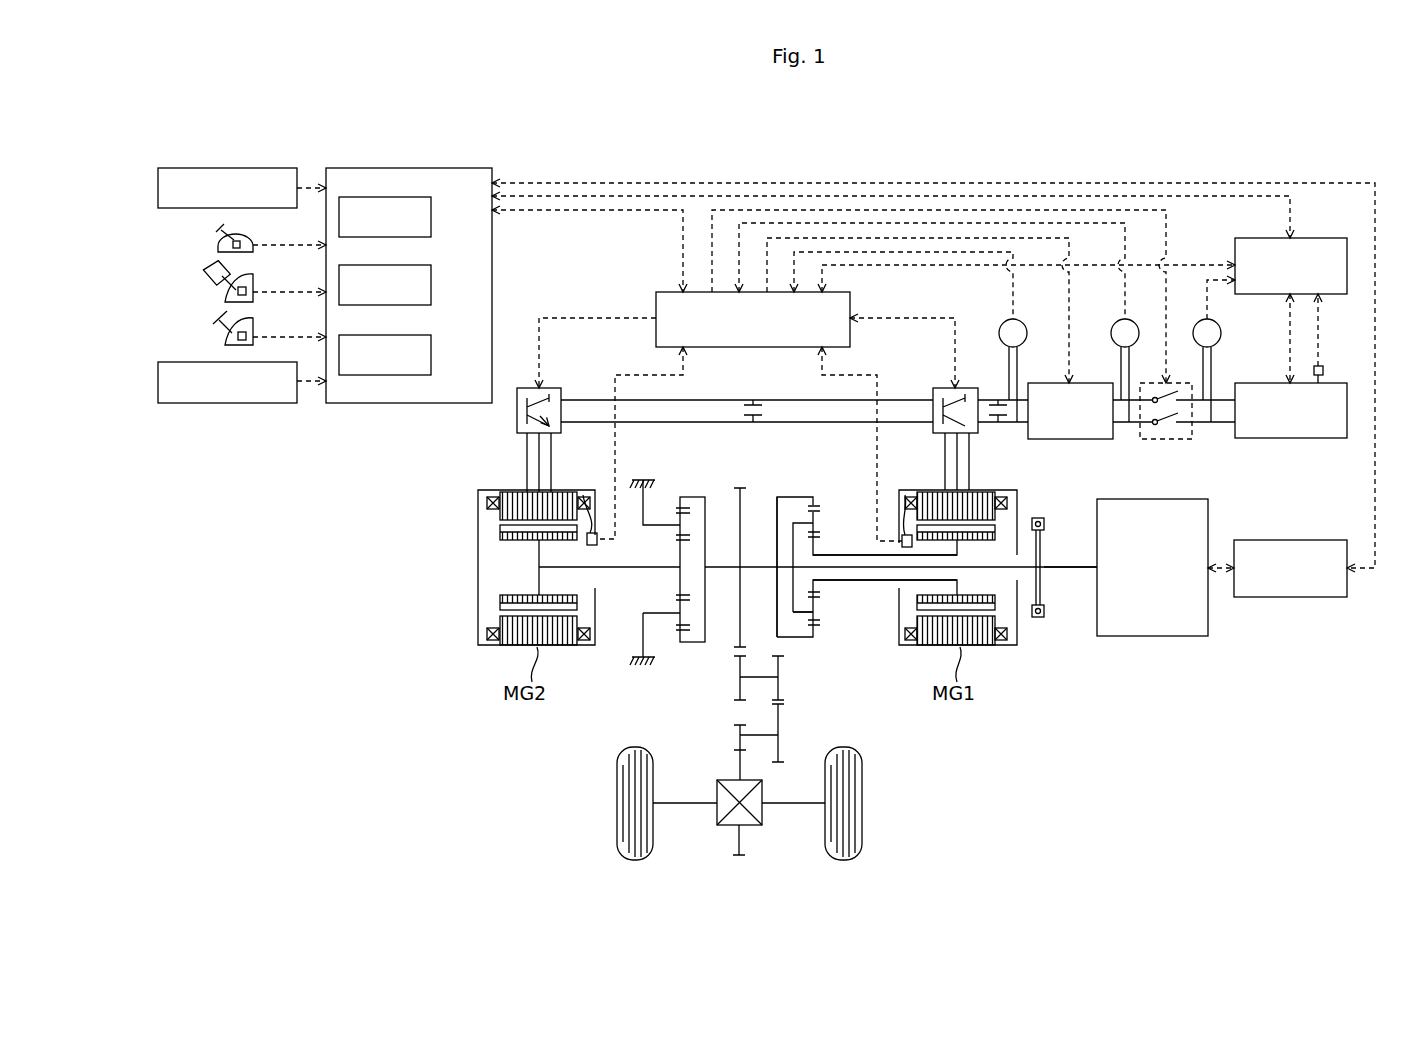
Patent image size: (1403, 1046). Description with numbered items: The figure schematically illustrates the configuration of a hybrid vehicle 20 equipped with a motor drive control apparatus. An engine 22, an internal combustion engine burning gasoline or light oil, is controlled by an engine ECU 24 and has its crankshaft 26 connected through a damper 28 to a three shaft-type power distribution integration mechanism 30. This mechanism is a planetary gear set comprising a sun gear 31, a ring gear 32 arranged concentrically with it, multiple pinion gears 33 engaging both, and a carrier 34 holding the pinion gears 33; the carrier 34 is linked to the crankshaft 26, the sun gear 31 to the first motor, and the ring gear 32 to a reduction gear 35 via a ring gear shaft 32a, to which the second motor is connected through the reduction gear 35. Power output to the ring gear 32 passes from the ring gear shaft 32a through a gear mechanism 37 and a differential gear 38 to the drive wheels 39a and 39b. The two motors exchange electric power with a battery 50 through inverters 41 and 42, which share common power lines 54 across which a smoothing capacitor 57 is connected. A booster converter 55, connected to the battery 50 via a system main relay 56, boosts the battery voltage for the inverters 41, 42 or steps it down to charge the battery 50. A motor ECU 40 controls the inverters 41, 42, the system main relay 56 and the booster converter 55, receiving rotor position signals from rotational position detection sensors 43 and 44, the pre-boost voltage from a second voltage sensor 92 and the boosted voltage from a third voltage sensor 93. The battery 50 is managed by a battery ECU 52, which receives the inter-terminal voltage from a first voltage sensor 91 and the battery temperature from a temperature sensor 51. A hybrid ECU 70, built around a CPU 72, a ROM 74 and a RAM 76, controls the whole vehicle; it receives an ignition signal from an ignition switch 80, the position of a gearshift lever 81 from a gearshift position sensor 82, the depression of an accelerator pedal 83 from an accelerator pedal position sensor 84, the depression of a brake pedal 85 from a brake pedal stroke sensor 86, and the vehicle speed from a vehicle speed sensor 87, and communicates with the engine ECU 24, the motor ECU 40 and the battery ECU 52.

The hybrid vehicle 20 is at (368, 574).
The engine 22 is at (1153, 637).
The engine electronic control unit 24 is at (1291, 598).
The crankshaft 26 is at (1063, 570).
The damper 28 is at (1038, 617).
The power distribution integration mechanism 30 is at (822, 497).
The sun gear 31 is at (818, 592).
The ring gear 32 is at (818, 637).
The ring gear shaft 32a is at (724, 567).
The pinion gears 33 is at (818, 620).
The carrier 34 is at (792, 540).
The reduction gear 35 is at (688, 493).
The gear mechanism 37 is at (796, 722).
The differential gear 38 is at (722, 778).
The drive wheel 39a is at (617, 803).
The drive wheel 39b is at (862, 803).
The motor electronic control unit 40 is at (658, 302).
The inverter 41 is at (940, 394).
The inverter 42 is at (561, 392).
The rotational position detection sensor 43 is at (905, 535).
The rotational position detection sensor 44 is at (592, 533).
The battery 50 is at (1323, 440).
The temperature sensor 51 is at (1320, 366).
The battery electronic control unit 52 is at (1322, 238).
The power lines 54 is at (700, 422).
The booster converter 55 is at (1073, 440).
The system main relay 56 is at (1171, 440).
The smoothing capacitor 57 is at (996, 405).
The hybrid electronic control unit 70 is at (410, 168).
The CPU 72 is at (431, 216).
The ROM 74 is at (431, 284).
The RAM 76 is at (431, 354).
The ignition switch 80 is at (158, 186).
The gearshift lever 81 is at (218, 228).
The gearshift position sensor 82 is at (218, 247).
The accelerator pedal 83 is at (204, 270).
The accelerator pedal position sensor 84 is at (226, 296).
The brake pedal 85 is at (214, 322).
The brake pedal stroke sensor 86 is at (226, 340).
The vehicle speed sensor 87 is at (158, 383).
The first voltage sensor 91 is at (1221, 333).
The second voltage sensor 92 is at (1124, 319).
The third voltage sensor 93 is at (1014, 319).